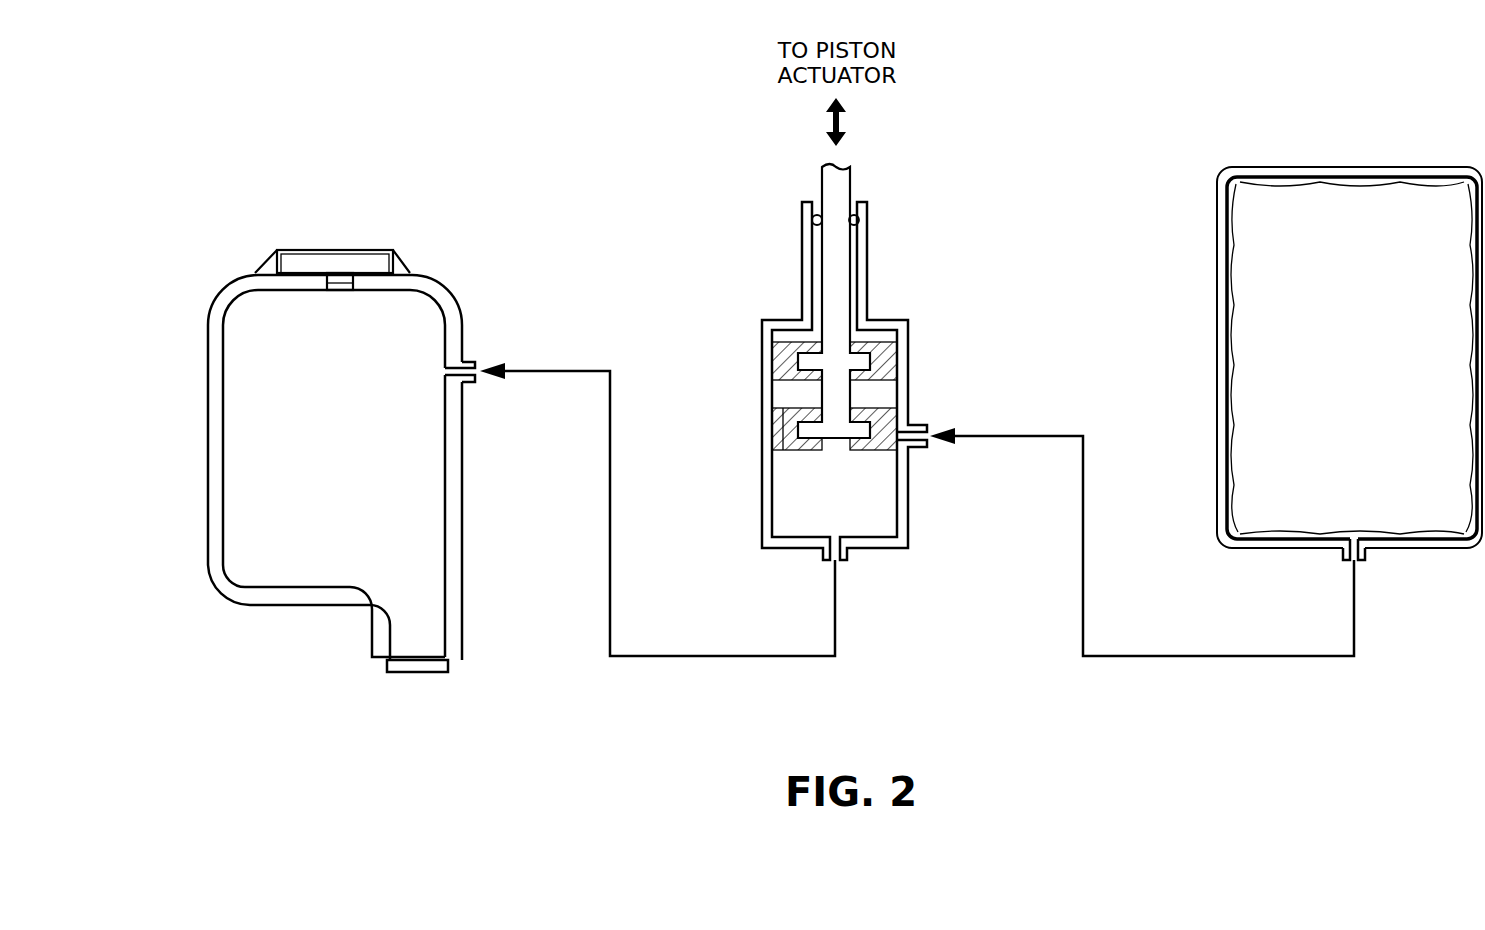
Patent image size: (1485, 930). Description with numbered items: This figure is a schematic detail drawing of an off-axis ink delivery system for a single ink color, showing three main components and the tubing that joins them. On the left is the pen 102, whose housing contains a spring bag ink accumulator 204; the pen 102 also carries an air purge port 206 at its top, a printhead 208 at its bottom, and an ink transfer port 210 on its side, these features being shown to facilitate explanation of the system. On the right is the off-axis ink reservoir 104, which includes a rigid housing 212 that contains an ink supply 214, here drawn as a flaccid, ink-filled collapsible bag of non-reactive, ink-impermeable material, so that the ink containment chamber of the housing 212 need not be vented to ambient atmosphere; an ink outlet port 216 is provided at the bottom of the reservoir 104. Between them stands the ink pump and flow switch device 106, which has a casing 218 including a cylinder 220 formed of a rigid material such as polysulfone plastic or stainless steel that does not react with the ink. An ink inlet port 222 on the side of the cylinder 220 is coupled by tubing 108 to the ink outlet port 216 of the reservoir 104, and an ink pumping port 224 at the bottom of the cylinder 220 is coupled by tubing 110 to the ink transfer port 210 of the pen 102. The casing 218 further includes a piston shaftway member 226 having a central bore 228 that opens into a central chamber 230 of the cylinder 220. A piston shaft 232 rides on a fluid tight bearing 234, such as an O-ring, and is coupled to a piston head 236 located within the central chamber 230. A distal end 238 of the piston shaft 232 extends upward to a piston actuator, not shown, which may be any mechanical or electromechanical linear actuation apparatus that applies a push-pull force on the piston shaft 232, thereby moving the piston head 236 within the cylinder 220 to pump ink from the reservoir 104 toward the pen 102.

The pen 102 is at (238, 622).
The off-axis ink reservoir 104 is at (1324, 143).
The ink pump and flow switch device 106 is at (920, 318).
The tubing 108 is at (1192, 658).
The tubing 110 is at (696, 658).
The spring bag ink accumulator 204 is at (262, 332).
The air purge port 206 is at (345, 272).
The printhead 208 is at (418, 673).
The ink transfer port 210 is at (478, 366).
The housing 212 is at (1224, 167).
The ink supply 214 is at (1265, 262).
The ink outlet port 216 is at (1367, 560).
The casing 218 is at (753, 313).
The cylinder 220 is at (762, 498).
The ink inlet port 222 is at (922, 447).
The ink pumping port 224 is at (848, 560).
The piston shaftway member 226 is at (867, 220).
The central bore 228 is at (855, 255).
The central chamber 230 is at (857, 503).
The piston shaft 232 is at (845, 297).
The fluid tight bearing 234 is at (812, 214).
The piston head 236 is at (755, 340).
The distal end 238 is at (843, 165).